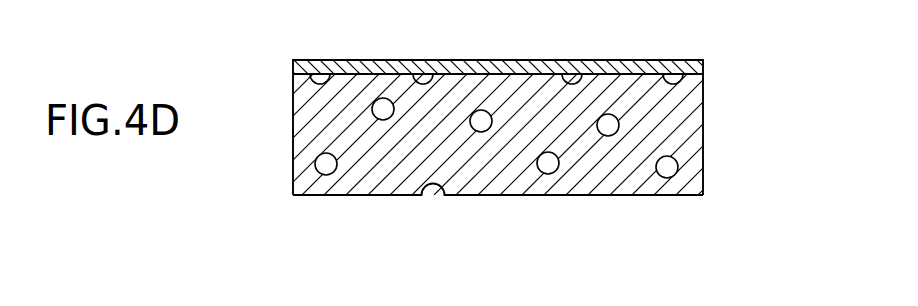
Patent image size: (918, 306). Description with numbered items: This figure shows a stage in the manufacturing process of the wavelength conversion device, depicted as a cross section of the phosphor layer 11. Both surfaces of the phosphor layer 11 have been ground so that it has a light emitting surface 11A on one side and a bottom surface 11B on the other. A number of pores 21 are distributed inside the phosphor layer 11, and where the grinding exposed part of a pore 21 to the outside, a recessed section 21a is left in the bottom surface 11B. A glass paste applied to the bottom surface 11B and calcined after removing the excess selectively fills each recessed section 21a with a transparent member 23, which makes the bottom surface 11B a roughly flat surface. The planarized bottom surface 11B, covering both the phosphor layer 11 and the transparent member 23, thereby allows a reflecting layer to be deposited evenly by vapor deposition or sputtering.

The phosphor layer 11 is at (307, 120).
The light emitting surface 11A is at (693, 195).
The bottom surface 11B is at (703, 61).
The pore 21 is at (657, 165).
The recessed section 21a is at (572, 75).
The transparent member 23 is at (293, 75).